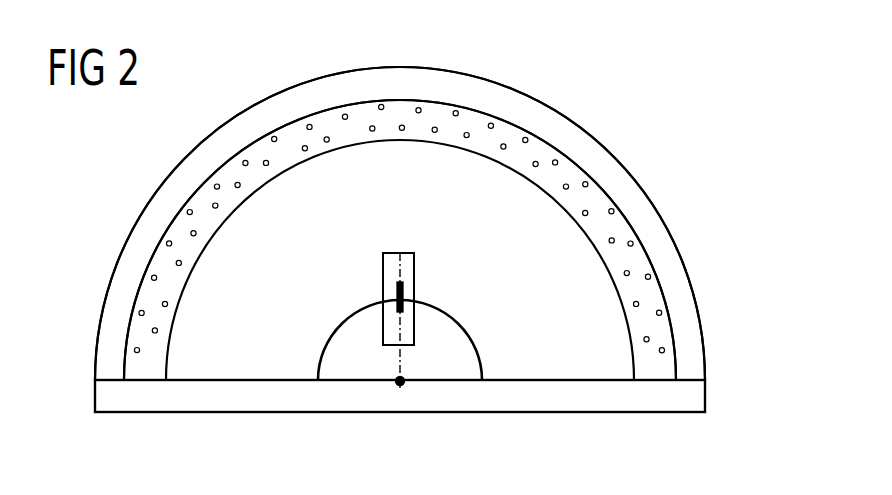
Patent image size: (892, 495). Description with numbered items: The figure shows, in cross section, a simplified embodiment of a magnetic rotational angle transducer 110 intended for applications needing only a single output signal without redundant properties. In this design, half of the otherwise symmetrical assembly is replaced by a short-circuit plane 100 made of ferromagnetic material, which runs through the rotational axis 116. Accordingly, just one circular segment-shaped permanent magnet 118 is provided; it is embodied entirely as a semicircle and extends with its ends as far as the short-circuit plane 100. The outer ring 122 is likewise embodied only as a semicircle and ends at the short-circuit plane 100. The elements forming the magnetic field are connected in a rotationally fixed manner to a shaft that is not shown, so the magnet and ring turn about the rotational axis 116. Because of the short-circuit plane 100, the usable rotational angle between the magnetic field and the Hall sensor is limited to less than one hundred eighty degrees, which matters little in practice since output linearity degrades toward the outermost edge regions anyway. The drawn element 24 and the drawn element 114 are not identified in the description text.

The rotational angle transducer 110 is at (640, 149).
The circular segment-shaped permanent magnet 118 is at (622, 233).
The outer ring 122 is at (680, 303).
The short-circuit plane 100 is at (697, 395).
The light source dome / LED 24 is at (452, 316).
The sensor element 114 is at (400, 282).
The rotational axis 116 is at (400, 386).